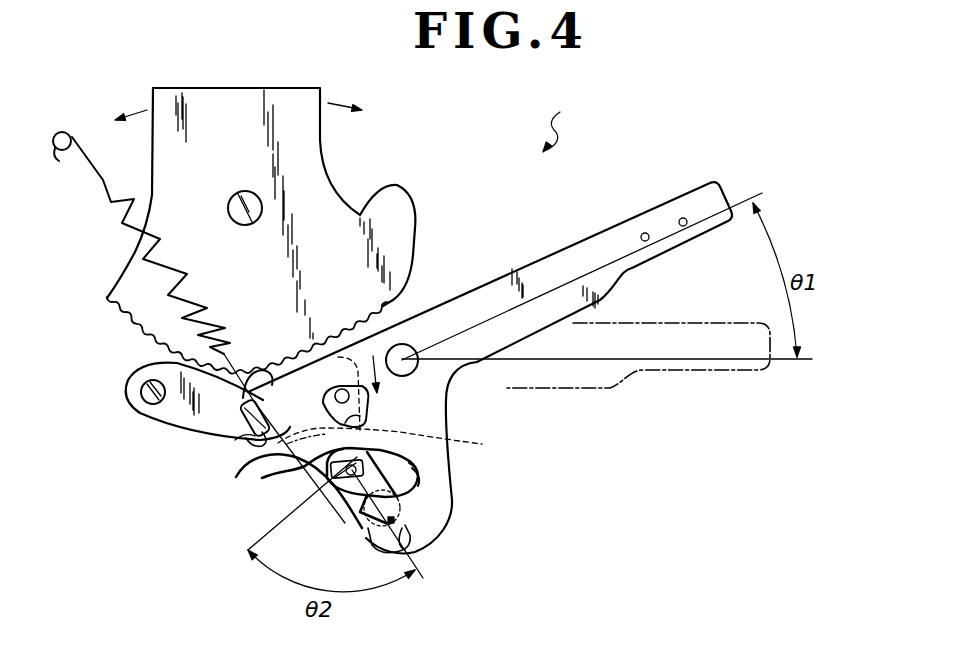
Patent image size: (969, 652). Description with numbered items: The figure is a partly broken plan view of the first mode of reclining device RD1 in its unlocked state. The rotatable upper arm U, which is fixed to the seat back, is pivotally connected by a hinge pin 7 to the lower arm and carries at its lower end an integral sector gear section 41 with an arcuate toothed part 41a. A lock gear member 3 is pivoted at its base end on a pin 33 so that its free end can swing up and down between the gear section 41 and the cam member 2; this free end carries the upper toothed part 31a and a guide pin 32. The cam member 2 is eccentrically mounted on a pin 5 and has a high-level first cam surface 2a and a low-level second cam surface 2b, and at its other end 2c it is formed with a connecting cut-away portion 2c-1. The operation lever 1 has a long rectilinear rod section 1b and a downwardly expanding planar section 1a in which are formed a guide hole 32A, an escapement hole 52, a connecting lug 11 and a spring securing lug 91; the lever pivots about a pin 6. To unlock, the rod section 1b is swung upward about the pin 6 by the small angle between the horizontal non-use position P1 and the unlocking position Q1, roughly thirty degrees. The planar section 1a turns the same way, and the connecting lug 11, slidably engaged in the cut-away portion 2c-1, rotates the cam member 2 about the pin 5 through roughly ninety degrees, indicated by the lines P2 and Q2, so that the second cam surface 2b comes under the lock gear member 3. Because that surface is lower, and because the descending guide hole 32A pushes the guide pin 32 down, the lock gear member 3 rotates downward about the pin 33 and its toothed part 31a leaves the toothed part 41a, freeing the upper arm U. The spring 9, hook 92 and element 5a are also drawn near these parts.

The operation lever 1 is at (509, 335).
The downwardly expanding planar section 1a is at (452, 497).
The rectilinear rod section 1b is at (578, 251).
The cam member 2 is at (343, 505).
The first cam surface 2a is at (240, 472).
The second cam surface 2b is at (397, 442).
The another end of cam member 2c is at (365, 527).
The connecting cut-away portion 2c-1 is at (373, 512).
The lock gear member 3 is at (181, 421).
The pin 5 is at (380, 474).
The spring plate end 5a is at (420, 482).
The pin 6 is at (403, 358).
The hinge pin 7 is at (242, 192).
The toothed sector 9 is at (226, 316).
The connecting lug 11 is at (412, 541).
The upper toothed part 31a is at (248, 392).
The guide pin 32 is at (368, 398).
The guide hole 32A is at (367, 423).
The pin 33 is at (143, 395).
The sector gear section 41 is at (137, 283).
The toothed part 41a is at (150, 347).
The escapement hole 52 is at (418, 474).
The spring securing lug 91 is at (246, 442).
The spring hook 92 is at (57, 128).
The upper arm U is at (322, 140).
The first mode of reclining device RD1 is at (573, 118).
The non-use horizontal position P1 is at (626, 360).
The unlocking position Q1 is at (607, 268).
The reference line P2 is at (282, 517).
The cam axis line Q2 is at (401, 540).